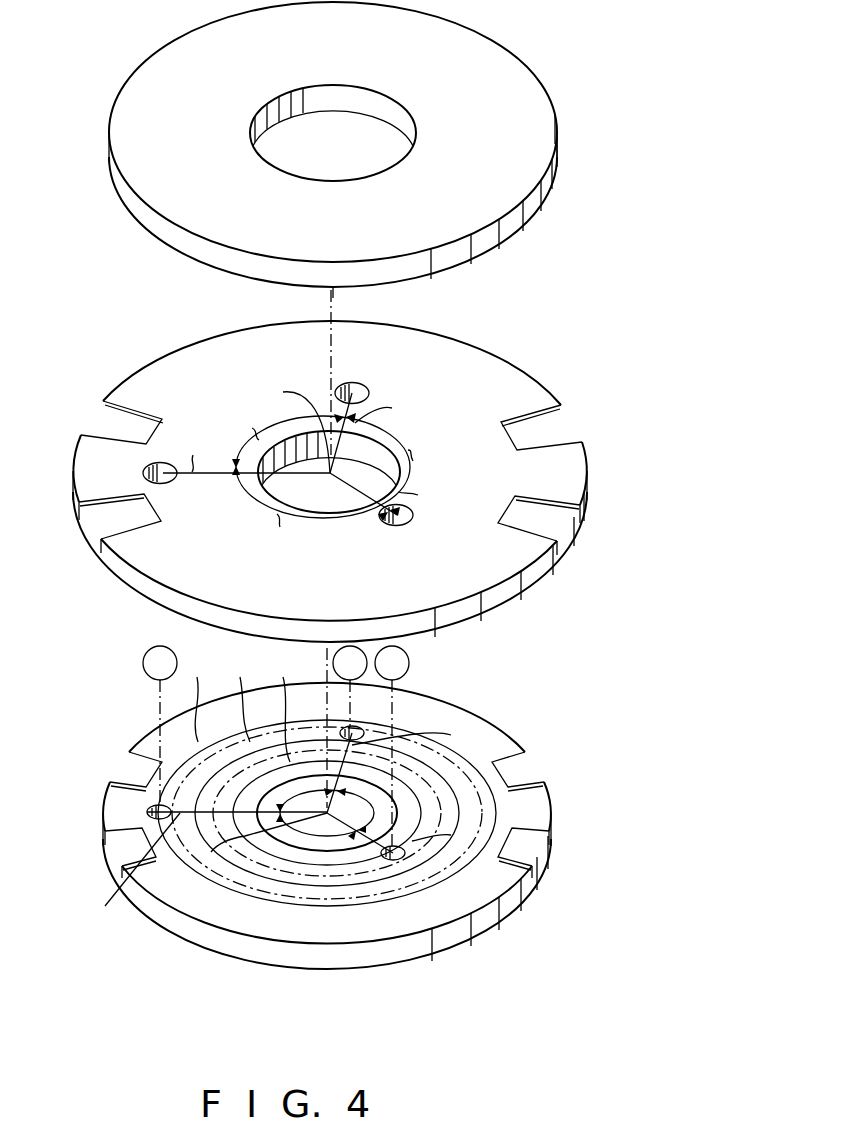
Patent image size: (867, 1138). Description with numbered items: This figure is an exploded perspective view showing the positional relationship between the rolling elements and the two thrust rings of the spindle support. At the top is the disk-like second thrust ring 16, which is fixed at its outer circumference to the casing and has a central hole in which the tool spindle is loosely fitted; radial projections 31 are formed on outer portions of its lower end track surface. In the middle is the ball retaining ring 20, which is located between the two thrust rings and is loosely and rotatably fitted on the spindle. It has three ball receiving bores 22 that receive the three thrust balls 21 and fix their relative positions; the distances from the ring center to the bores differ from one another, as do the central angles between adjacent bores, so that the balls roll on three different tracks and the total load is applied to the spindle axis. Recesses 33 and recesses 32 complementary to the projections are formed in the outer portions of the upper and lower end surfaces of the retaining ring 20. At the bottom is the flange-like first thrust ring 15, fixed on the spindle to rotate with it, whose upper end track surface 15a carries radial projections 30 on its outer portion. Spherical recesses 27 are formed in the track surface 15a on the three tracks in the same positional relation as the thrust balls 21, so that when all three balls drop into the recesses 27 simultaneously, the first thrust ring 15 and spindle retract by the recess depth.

The second thrust ring 16 is at (558, 137).
The radial projections 31 is at (121, 204).
The ball retaining ring 20 is at (590, 483).
The ball receiving bores 22 is at (363, 386).
The recesses 33 is at (565, 430).
The recesses 32 is at (568, 550).
The thrust balls 21 is at (143, 663).
The first thrust ring 15 is at (471, 716).
The spherical recesses 27 is at (147, 811).
The radial projections 30 is at (114, 775).
The track surface 15a is at (210, 900).